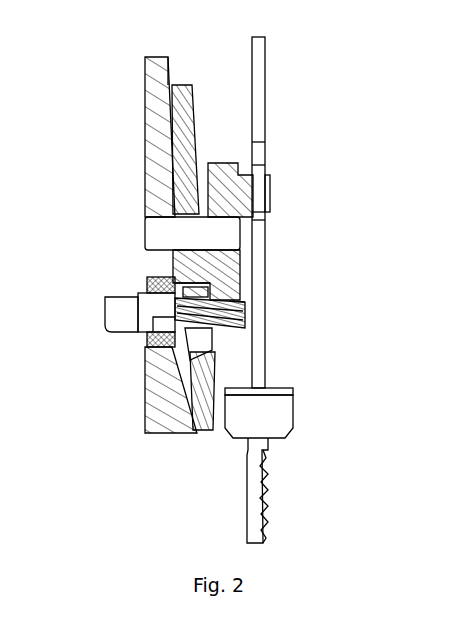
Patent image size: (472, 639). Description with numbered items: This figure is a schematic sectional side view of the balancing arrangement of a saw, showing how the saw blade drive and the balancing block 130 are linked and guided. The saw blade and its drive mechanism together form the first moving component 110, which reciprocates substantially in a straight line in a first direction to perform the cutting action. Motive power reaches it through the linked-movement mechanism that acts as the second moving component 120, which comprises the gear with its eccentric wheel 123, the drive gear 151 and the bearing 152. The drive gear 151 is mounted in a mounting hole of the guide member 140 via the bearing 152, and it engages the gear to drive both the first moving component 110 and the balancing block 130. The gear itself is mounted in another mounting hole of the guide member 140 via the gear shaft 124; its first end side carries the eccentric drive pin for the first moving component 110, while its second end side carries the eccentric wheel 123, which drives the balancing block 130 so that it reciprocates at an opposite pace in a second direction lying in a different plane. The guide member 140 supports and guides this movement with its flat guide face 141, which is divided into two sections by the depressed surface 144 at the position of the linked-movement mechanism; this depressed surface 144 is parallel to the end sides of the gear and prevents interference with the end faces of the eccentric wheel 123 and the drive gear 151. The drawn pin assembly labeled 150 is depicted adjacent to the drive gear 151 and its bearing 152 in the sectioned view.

The first moving component 110 is at (266, 107).
The second moving component 120 is at (231, 197).
The eccentric wheel 123 is at (185, 265).
The gear shaft 124 is at (165, 232).
The balancing block 130 is at (172, 129).
The guide member 140 is at (156, 398).
The guide face 141 is at (170, 73).
The depressed surface 144 is at (174, 188).
The locking pin 150 is at (247, 322).
The drive gear 151 is at (240, 298).
The bearing 152 is at (146, 342).